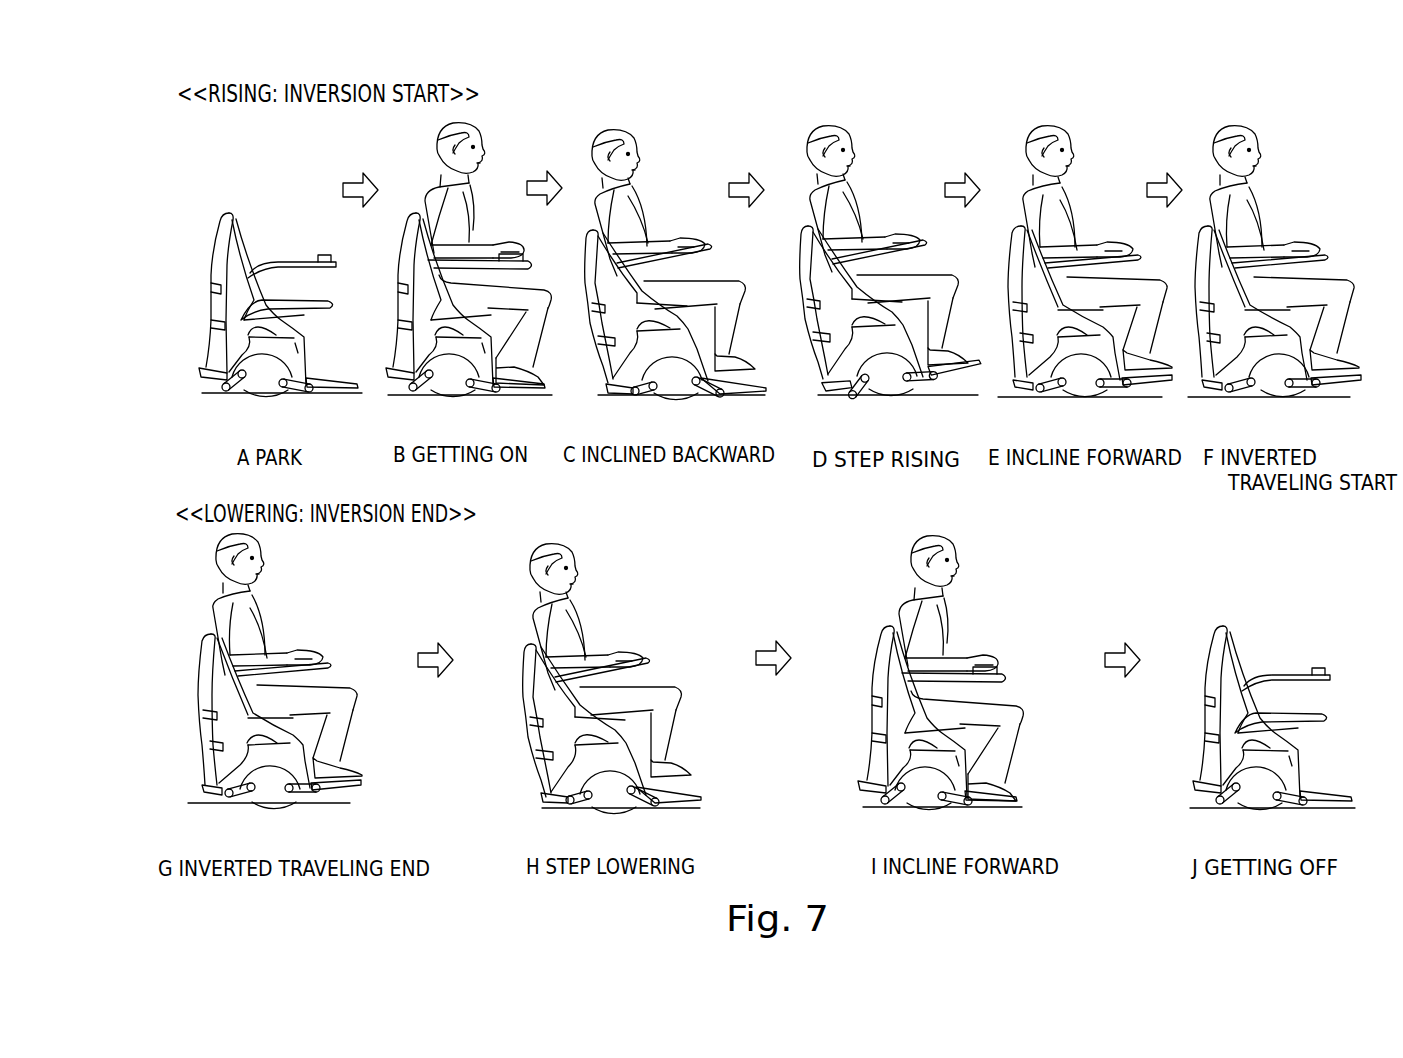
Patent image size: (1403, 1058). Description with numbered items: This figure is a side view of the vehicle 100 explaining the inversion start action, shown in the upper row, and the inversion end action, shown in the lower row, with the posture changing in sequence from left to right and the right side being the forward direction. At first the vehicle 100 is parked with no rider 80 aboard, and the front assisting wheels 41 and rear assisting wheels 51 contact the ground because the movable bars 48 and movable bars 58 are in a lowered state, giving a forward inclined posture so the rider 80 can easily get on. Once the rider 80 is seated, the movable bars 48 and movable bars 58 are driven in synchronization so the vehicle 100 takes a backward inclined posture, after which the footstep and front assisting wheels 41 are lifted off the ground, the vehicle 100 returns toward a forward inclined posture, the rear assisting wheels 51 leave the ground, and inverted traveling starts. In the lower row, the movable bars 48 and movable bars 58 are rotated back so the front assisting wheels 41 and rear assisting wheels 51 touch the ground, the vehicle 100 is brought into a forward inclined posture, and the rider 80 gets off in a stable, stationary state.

The vehicle 100 is at (250, 325).
The rider 80 is at (1265, 196).
The rear assisting wheels 51 is at (190, 389).
The movable bars 58 is at (232, 404).
The movable bars 48 is at (308, 408).
The front assisting wheels 41 is at (342, 405).